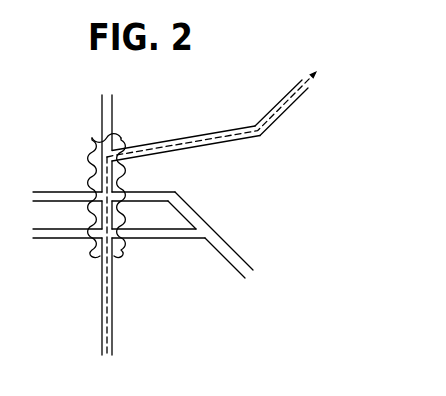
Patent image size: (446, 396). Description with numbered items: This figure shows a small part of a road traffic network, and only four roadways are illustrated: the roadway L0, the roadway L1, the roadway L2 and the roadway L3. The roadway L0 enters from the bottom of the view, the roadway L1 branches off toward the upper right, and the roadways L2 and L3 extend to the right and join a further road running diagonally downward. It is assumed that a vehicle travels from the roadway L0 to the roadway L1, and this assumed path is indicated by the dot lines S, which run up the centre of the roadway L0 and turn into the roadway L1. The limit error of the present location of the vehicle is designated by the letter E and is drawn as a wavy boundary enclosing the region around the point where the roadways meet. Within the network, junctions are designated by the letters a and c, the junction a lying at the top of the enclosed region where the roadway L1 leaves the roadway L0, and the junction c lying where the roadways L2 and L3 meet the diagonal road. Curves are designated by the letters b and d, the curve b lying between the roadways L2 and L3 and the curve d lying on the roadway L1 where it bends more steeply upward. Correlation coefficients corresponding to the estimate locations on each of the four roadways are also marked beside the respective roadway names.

The roadway L0 is at (119, 258).
The roadway L1 is at (186, 143).
The roadway L2 is at (143, 186).
The roadway L3 is at (158, 246).
The dot lines S is at (107, 265).
The limit error of the present location E is at (88, 158).
The junction a is at (98, 136).
The curve b is at (168, 207).
The junction c is at (207, 234).
The curve d is at (261, 135).